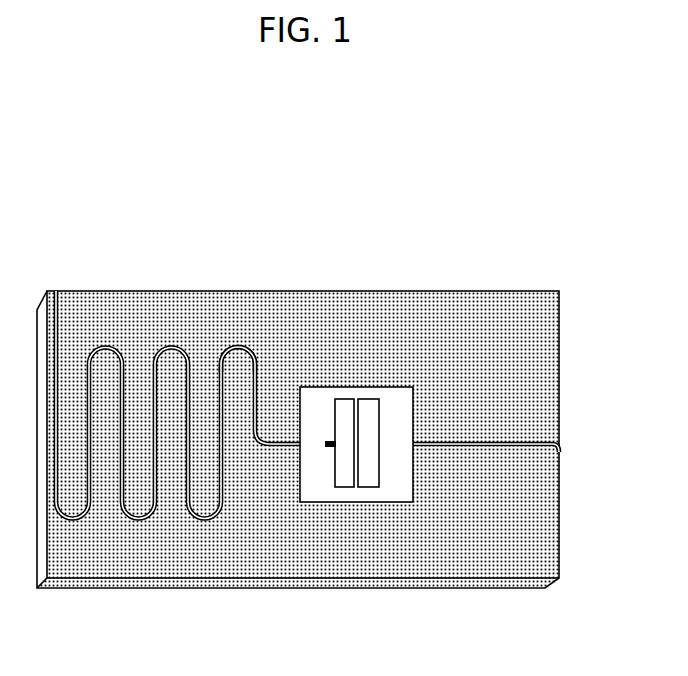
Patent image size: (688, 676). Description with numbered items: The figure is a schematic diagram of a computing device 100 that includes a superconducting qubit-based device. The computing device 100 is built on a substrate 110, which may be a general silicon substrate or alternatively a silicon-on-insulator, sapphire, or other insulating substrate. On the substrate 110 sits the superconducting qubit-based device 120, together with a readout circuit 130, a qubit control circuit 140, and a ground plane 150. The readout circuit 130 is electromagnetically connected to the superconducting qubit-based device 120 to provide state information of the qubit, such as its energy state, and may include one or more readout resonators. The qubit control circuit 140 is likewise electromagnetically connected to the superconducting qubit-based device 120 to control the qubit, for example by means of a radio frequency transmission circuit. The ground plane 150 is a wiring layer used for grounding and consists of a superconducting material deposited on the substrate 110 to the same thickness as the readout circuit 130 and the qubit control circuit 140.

The computing device 100 is at (370, 266).
The substrate 110 is at (412, 588).
The superconducting qubit-based device 120 is at (320, 490).
The readout circuit 130 is at (240, 346).
The qubit control circuit 140 is at (506, 441).
The ground plane 150 is at (170, 560).